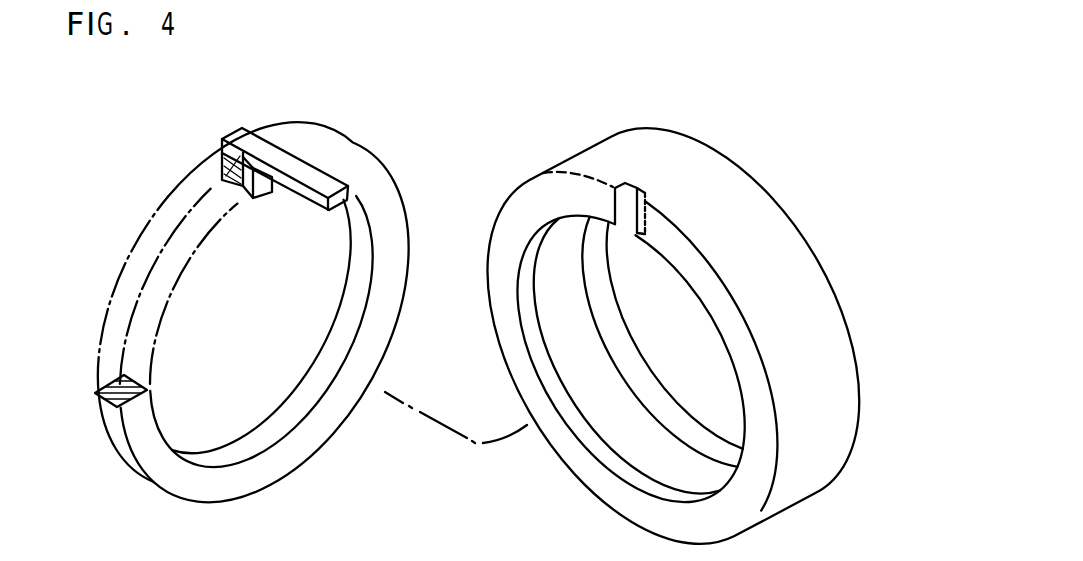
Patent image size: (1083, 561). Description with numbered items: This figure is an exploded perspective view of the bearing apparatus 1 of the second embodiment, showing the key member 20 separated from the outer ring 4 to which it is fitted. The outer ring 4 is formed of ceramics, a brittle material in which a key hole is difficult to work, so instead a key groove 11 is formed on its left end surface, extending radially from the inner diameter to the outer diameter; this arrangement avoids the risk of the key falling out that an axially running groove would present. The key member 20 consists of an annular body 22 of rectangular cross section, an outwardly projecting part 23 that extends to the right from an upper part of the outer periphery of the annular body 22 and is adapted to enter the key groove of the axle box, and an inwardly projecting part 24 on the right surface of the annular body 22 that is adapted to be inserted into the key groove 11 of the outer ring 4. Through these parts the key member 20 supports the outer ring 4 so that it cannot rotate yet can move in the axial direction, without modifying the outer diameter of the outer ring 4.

The bearing apparatus 1 is at (606, 111).
The outer ring 4 is at (797, 227).
The key groove 11 is at (637, 188).
The key member 20 is at (462, 171).
The annular body 22 is at (143, 455).
The outwardly projecting part 23 is at (310, 173).
The inwardly projecting part 24 is at (235, 222).